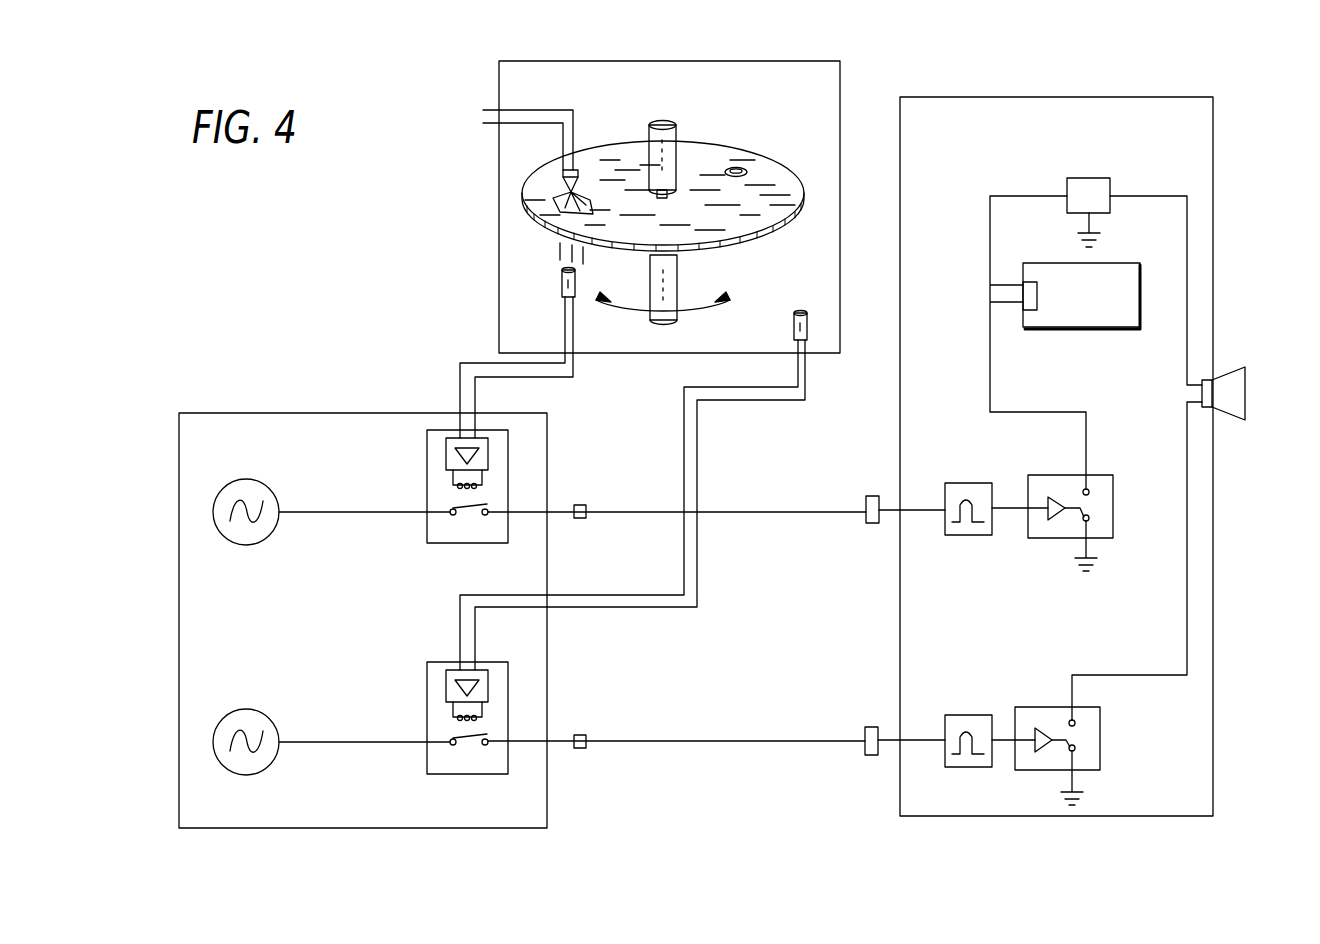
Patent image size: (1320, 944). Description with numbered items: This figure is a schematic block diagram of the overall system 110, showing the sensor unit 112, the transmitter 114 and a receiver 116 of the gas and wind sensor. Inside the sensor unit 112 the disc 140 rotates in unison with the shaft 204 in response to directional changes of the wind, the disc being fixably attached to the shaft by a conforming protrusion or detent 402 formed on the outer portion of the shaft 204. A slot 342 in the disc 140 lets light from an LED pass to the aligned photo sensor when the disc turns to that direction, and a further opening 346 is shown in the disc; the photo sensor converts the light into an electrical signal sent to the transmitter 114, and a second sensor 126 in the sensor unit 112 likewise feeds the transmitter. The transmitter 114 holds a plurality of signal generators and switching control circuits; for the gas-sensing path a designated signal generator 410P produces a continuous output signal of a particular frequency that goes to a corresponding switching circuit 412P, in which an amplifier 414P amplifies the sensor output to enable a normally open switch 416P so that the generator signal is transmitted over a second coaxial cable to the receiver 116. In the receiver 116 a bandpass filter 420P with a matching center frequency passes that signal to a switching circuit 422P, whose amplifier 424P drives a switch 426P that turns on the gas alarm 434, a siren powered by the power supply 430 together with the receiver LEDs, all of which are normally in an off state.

The system 110 is at (723, 896).
The sensor unit 112 is at (838, 73).
The transmitter 114 is at (203, 830).
The receiver 116 is at (1193, 152).
The sensor 126 is at (808, 318).
The disc 140 is at (770, 237).
The shaft 204 is at (680, 150).
The slot 342 is at (547, 208).
The hole 346 is at (747, 171).
The protrusion or detent 402 is at (667, 198).
The signal generator 410P is at (242, 777).
The switching circuit 412P is at (484, 592).
The amplifier 414P is at (447, 685).
The switch 416P is at (488, 736).
The bandpass filter 420P is at (975, 767).
The switching circuit 422P is at (1102, 745).
The amplifier 424P is at (1042, 728).
The switch 426P is at (1077, 723).
The power supply 430 is at (1078, 178).
The audible alarm 434 is at (1238, 415).